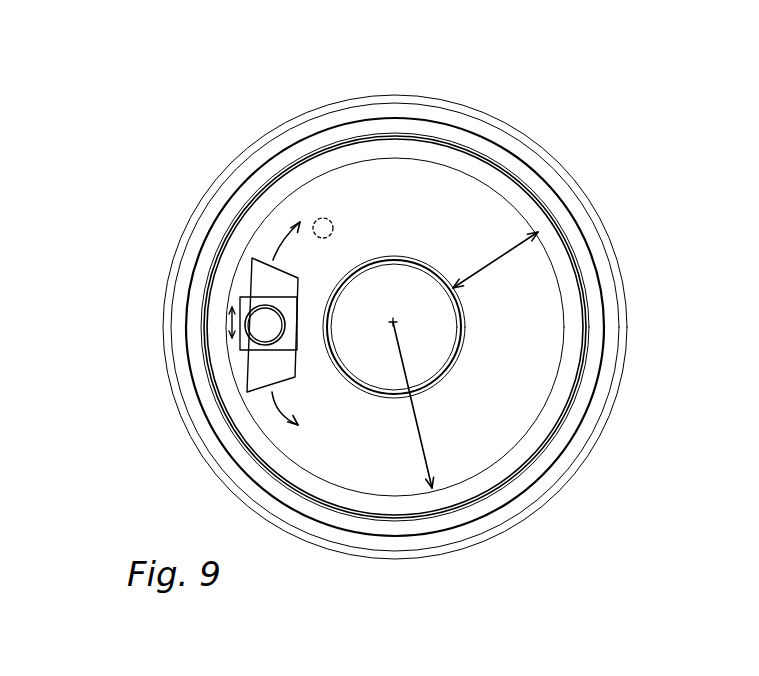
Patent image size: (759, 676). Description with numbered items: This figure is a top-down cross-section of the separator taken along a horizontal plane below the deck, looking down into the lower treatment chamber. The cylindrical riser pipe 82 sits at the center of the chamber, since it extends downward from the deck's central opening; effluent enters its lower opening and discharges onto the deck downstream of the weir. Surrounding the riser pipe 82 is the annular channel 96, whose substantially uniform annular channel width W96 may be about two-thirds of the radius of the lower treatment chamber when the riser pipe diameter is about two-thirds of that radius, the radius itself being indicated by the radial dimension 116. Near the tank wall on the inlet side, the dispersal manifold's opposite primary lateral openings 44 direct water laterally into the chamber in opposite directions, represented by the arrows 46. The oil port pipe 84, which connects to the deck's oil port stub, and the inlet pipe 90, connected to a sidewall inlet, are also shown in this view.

The primary lateral opening 44 is at (280, 240).
The arrow 46 is at (259, 258).
The riser pipe 82 is at (417, 257).
The oil port pipe 84 is at (325, 216).
The inlet pipe 90 is at (427, 319).
The annular channel 96 is at (533, 328).
The annular channel width W96 is at (502, 257).
The radius 116 is at (427, 442).